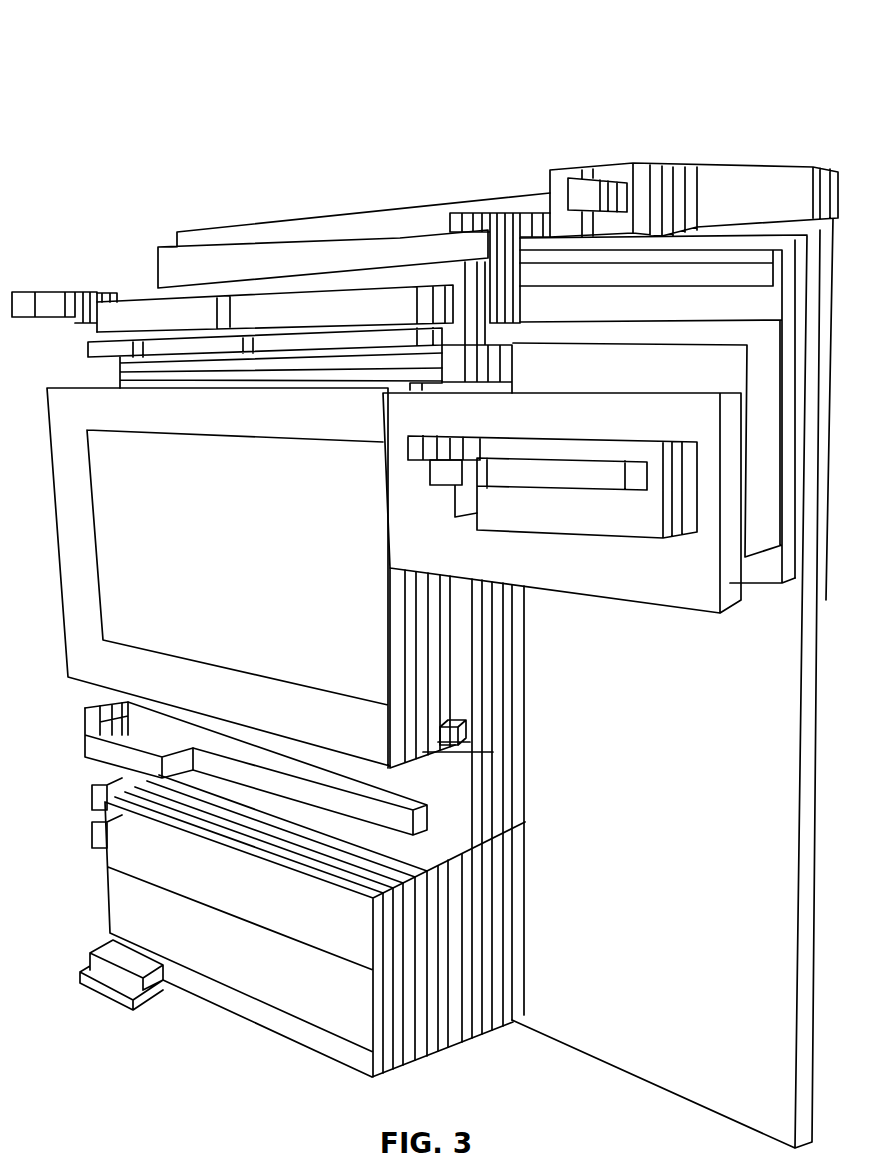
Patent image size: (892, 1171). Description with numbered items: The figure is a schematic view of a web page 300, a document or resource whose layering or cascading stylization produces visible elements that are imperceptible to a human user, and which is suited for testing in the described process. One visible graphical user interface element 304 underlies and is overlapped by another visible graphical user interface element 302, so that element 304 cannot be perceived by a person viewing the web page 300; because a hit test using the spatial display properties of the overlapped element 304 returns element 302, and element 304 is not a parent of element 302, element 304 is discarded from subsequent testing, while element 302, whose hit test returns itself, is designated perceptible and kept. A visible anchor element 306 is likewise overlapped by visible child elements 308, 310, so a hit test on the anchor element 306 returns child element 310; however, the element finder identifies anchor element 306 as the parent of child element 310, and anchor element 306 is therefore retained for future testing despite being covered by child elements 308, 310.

The web page 300 is at (105, 36).
The visible graphical user interface element 302 is at (433, 488).
The visible graphical user interface element 304 is at (483, 489).
The visible anchor element 306 is at (175, 745).
The visible child element 308 is at (108, 722).
The visible child element 310 is at (85, 742).